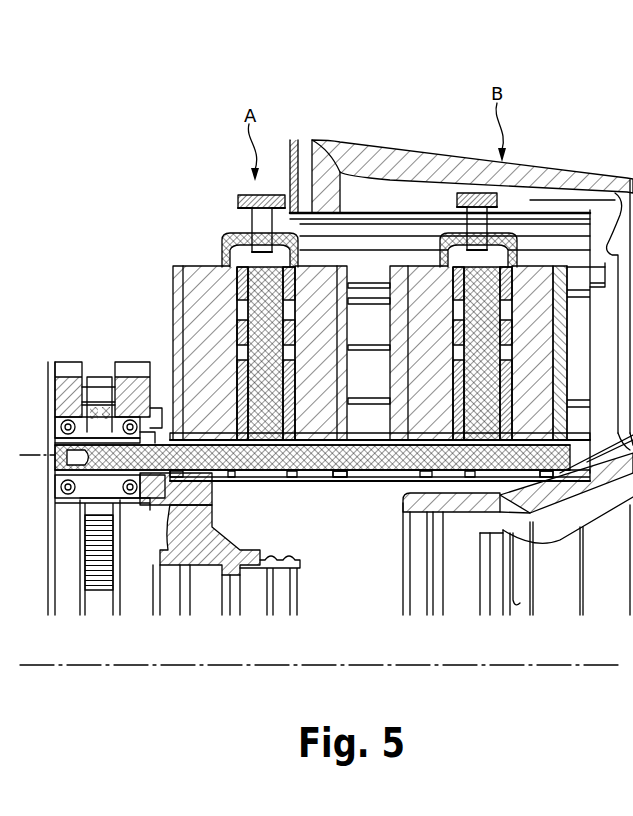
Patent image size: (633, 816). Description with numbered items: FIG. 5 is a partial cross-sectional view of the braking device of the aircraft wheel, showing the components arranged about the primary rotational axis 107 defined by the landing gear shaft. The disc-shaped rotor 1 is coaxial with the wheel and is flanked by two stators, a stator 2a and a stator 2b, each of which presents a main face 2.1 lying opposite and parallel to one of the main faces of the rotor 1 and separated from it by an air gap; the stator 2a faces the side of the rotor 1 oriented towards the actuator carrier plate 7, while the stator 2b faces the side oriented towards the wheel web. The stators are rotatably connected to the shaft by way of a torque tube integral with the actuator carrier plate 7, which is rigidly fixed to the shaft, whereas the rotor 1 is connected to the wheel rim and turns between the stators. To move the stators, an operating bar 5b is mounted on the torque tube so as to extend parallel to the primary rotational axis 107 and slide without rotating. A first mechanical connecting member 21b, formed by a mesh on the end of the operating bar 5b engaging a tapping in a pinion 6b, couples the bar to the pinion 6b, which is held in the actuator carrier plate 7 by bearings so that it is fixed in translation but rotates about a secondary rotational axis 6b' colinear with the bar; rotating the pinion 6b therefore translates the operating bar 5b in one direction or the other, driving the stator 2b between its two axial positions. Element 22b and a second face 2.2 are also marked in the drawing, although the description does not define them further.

The rotor 1 is at (240, 237).
The stator 2a is at (200, 267).
The stator 2b is at (311, 428).
The connecting slot of rotor segment 22b is at (340, 493).
The first mechanical connecting member 21b is at (95, 424).
The pinion 6b is at (80, 574).
The secondary rotational axis 6b' is at (286, 474).
The operating bar 5b is at (188, 476).
The actuator carrier plate 7 is at (200, 550).
The primary rotational axis 107 is at (617, 668).
The main face 2.1 is at (9, 313).
The stator sub-segment 2.2 is at (9, 317).